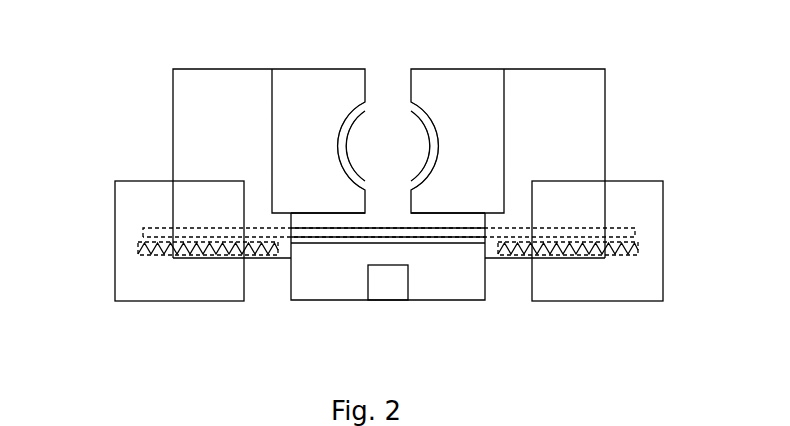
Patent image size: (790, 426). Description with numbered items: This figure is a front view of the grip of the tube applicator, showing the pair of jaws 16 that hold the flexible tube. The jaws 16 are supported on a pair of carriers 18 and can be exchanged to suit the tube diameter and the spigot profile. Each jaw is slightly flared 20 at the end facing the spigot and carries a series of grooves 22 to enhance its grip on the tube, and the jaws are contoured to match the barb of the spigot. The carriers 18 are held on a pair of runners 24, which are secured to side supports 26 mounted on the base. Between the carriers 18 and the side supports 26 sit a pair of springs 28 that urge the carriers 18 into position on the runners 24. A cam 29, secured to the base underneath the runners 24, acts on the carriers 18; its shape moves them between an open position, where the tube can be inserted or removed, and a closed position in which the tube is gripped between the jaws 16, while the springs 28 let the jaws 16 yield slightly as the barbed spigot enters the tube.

The jaws 16 is at (408, 118).
The carriers 18 is at (473, 88).
The flared end 20 is at (428, 170).
The grooves 22 is at (352, 120).
The runners 24 is at (628, 231).
The side supports 26 is at (640, 285).
The springs 28 is at (140, 248).
The cam 29 is at (438, 281).